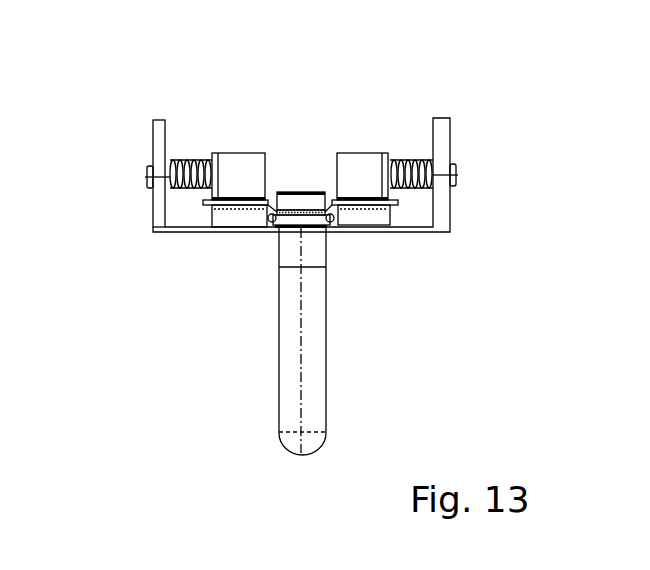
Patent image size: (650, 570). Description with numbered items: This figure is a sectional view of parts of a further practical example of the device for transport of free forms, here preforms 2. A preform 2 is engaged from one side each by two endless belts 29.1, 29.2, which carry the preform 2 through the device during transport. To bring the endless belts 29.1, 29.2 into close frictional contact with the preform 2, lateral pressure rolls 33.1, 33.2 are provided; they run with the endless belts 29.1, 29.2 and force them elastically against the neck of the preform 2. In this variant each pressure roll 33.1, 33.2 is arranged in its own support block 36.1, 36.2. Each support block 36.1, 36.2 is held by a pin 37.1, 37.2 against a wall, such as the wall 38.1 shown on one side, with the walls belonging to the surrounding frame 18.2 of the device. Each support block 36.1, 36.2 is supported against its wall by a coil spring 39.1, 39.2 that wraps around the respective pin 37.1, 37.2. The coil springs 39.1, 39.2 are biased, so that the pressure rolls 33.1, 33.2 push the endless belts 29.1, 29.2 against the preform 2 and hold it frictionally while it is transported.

The preform 2 is at (313, 374).
The holder frame 18.2 is at (443, 203).
The endless belt 29.1 is at (272, 222).
The endless belt 29.2 is at (330, 222).
The pressure roll 33.1 is at (228, 215).
The pressure roll 33.2 is at (378, 215).
The support block 36.1 is at (232, 170).
The support block 36.2 is at (364, 175).
The pin 37.1 is at (192, 162).
The pin 37.2 is at (412, 168).
The wall 38.1 is at (158, 138).
The coil spring 39.1 is at (168, 188).
The coil spring 39.2 is at (408, 185).